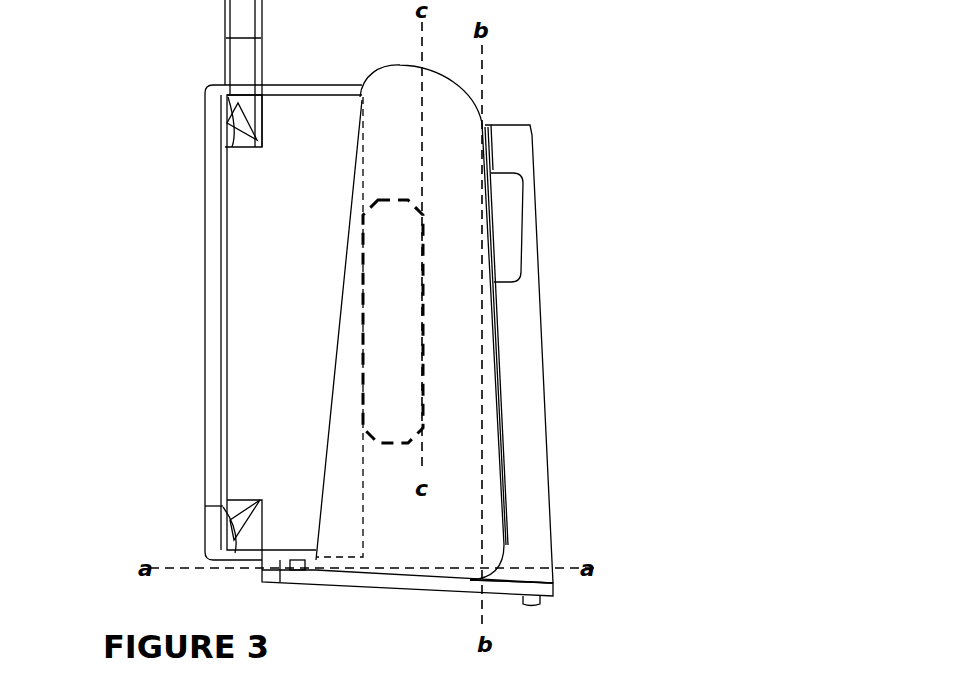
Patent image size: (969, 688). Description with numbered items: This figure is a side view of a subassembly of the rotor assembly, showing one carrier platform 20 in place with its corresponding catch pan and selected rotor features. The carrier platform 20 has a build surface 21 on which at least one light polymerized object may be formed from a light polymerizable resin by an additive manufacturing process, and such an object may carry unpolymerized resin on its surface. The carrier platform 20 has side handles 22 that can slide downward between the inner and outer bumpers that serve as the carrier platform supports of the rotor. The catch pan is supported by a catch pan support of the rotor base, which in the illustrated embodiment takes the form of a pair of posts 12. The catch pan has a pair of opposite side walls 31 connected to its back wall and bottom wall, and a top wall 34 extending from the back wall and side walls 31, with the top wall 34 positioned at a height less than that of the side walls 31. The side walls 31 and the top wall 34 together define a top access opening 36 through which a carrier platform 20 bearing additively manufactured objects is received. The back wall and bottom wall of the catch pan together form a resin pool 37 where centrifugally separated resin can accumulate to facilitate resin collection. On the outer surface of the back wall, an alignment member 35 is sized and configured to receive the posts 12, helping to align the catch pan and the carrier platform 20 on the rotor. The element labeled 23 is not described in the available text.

The posts 12 is at (532, 452).
The carrier platform 20 is at (188, 362).
The build surface 21 is at (545, 687).
The side handles 22 is at (212, 288).
The rod 23 is at (238, 12).
The side walls 31 is at (447, 277).
The top wall 34 is at (605, 687).
The alignment member 35 is at (505, 218).
The top access opening 36 is at (393, 50).
The resin pool 37 is at (465, 573).